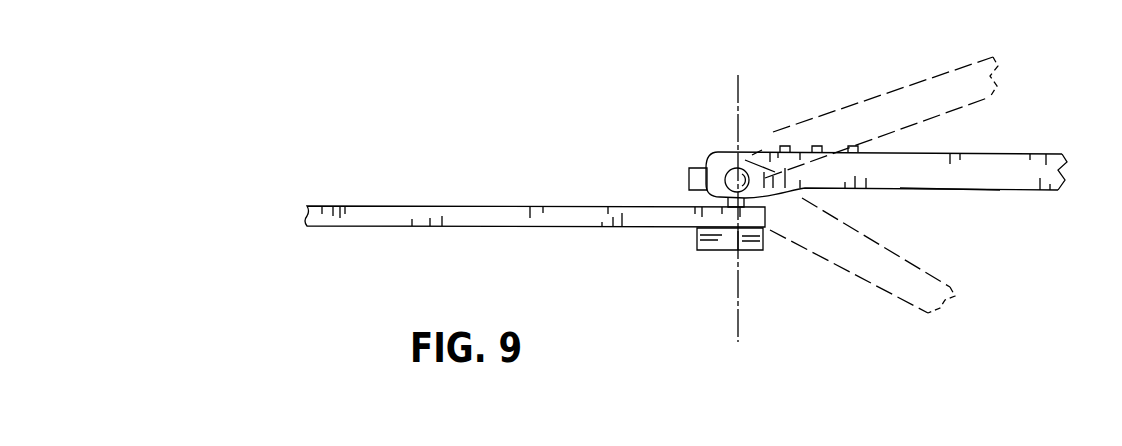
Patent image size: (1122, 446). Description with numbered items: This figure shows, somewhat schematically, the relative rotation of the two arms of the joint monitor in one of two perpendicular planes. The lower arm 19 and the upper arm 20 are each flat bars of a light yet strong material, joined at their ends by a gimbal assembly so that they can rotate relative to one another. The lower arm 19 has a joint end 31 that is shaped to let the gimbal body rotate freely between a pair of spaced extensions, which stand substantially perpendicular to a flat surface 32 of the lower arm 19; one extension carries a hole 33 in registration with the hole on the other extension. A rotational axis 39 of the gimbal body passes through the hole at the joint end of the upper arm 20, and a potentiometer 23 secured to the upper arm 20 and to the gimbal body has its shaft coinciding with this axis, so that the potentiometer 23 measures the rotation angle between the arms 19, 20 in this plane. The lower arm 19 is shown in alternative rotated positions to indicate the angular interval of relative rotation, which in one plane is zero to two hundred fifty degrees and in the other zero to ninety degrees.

The lower arm 19 is at (1060, 184).
The upper arm 20 is at (412, 224).
The potentiometer 23 is at (710, 237).
The joint end 31 is at (697, 192).
The flat surface 32 is at (962, 192).
The hole 33 is at (738, 140).
The rotational axis 39 is at (740, 323).